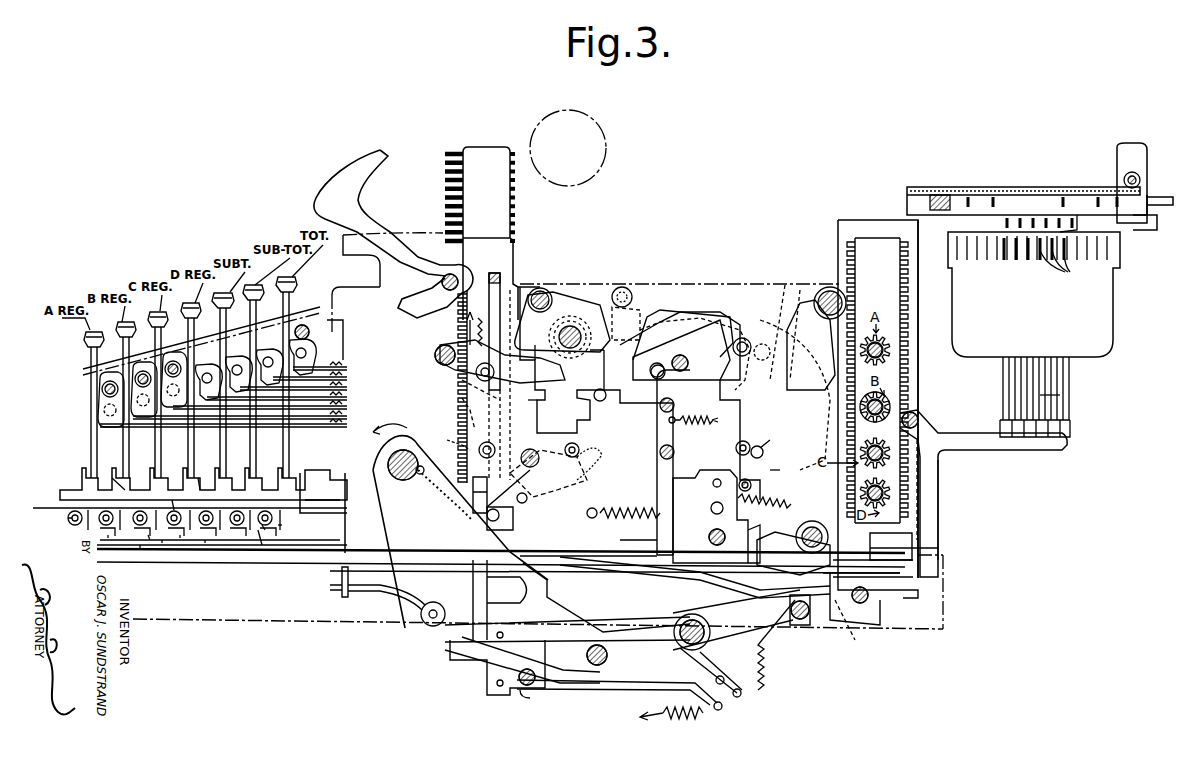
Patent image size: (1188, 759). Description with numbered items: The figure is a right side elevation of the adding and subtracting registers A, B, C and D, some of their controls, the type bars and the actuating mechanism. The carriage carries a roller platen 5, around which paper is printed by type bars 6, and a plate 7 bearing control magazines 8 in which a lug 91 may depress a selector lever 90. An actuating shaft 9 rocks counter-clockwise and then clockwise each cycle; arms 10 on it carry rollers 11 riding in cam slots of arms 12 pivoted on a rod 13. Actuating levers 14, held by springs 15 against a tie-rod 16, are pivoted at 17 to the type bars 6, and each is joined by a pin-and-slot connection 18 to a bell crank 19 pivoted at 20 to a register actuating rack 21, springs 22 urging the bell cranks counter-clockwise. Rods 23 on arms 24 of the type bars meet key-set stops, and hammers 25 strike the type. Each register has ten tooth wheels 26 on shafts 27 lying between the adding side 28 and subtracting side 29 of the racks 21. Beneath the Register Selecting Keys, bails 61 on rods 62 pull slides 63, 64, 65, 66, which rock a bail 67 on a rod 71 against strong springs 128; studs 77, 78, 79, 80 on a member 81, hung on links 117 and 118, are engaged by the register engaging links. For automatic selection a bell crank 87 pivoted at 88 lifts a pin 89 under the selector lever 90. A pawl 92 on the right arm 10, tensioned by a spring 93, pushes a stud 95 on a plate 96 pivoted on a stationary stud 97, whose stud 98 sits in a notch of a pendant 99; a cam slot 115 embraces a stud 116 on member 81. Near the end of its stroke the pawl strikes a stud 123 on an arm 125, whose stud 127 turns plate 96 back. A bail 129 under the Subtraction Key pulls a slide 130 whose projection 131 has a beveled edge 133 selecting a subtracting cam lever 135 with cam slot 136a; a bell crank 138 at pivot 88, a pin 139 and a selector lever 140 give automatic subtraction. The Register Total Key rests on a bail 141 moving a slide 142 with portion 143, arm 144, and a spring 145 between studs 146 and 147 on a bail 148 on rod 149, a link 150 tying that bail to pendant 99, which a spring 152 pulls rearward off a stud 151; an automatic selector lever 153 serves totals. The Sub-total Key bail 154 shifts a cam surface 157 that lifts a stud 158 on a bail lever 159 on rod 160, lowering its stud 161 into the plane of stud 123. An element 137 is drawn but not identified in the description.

The roller platen 5 is at (603, 148).
The type bars 6 is at (462, 319).
The plate 7 is at (970, 190).
The control magazines 8 is at (1012, 190).
The actuating shaft 9 is at (447, 440).
The arms 10 is at (393, 525).
The rollers 11 is at (418, 628).
The arms 12 is at (580, 630).
The rod 13 is at (678, 620).
The actuating levers 14 is at (607, 682).
The springs 15 is at (660, 710).
The tie-rod 16 is at (608, 650).
The pivot 17 is at (524, 692).
The pin-and-slot connection 18 is at (795, 622).
The bell crank 19 is at (824, 620).
The pivot 20 is at (872, 603).
The register actuating racks 21 is at (905, 595).
The springs 22 is at (752, 656).
The rods 23 is at (340, 579).
The arms 24 is at (395, 593).
The hammers 25 is at (362, 212).
The ten tooth wheels 26 is at (892, 404).
The shafts 27 is at (890, 358).
The adding side 28 is at (840, 262).
The subtracting side 29 is at (905, 283).
The bails 61 is at (70, 518).
The rods 62 is at (258, 535).
The slide 63 is at (108, 538).
The slide 64 is at (140, 547).
The slide 65 is at (163, 542).
The slide 66 is at (180, 538).
The bail 67 is at (805, 512).
The rod 71 is at (810, 528).
The stud 77 is at (750, 478).
The stud 78 is at (768, 443).
The stud 79 is at (750, 440).
The stud 80 is at (762, 360).
The member 81 is at (598, 400).
The bell crank 87 is at (933, 510).
The pivot 88 is at (921, 418).
The pin 89 is at (1062, 393).
The selector lever 90 is at (1064, 271).
The lug 91 is at (1074, 216).
The pawl 92 is at (536, 510).
The spring 93 is at (445, 505).
The stud 95 is at (528, 503).
The plate 96 is at (500, 440).
The stationary stud 97 is at (534, 461).
The stud 98 is at (567, 452).
The pendant 99 is at (528, 411).
The cam slot 115 is at (768, 326).
The stud 116 is at (778, 298).
The link 117 is at (542, 312).
The link 118 is at (812, 345).
The stud 123 is at (455, 376).
The arm 125 is at (434, 355).
The stud 127 is at (462, 398).
The springs 128 is at (860, 622).
The bail 129 is at (205, 543).
The slide 130 is at (933, 538).
The upstanding projection 131 is at (658, 470).
The beveled edge 133 is at (607, 326).
The subtracting cam lever 135 is at (690, 367).
The cam slot 136a is at (788, 457).
The spring 137 is at (688, 412).
The bell crank 138 is at (968, 482).
The pin 139 is at (1012, 366).
The selector lever 140 is at (1022, 245).
The bail 141 is at (282, 525).
The slide 142 is at (570, 548).
The upwardly extending portion 143 is at (628, 545).
The rearwardly extending arm 144 is at (695, 478).
The spring 145 is at (648, 516).
The stud 146 is at (588, 516).
The stud 147 is at (708, 532).
The bail 148 is at (758, 553).
The rod 149 is at (705, 572).
The link 150 is at (610, 478).
The stud 151 is at (454, 431).
The spring 152 is at (772, 525).
The automatic selector lever 153 is at (1002, 258).
The bail 154 is at (262, 525).
The cam surface 157 is at (685, 390).
The stud 158 is at (700, 355).
The bail lever 159 is at (650, 410).
The rod 160 is at (632, 410).
The stud 161 is at (442, 366).